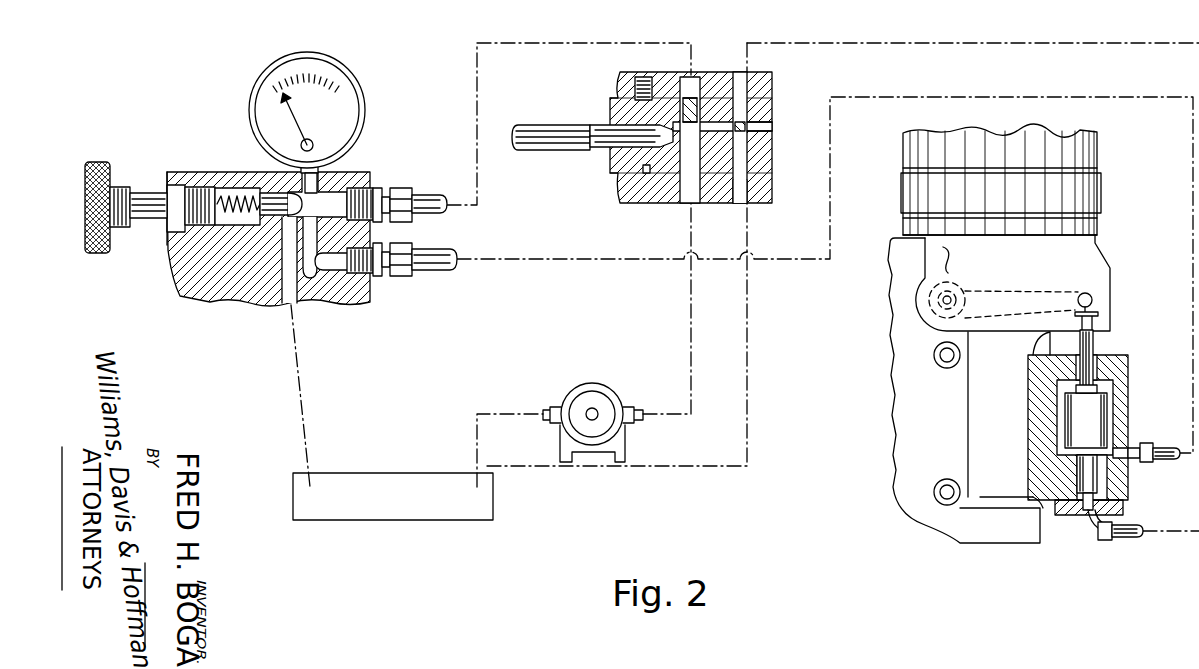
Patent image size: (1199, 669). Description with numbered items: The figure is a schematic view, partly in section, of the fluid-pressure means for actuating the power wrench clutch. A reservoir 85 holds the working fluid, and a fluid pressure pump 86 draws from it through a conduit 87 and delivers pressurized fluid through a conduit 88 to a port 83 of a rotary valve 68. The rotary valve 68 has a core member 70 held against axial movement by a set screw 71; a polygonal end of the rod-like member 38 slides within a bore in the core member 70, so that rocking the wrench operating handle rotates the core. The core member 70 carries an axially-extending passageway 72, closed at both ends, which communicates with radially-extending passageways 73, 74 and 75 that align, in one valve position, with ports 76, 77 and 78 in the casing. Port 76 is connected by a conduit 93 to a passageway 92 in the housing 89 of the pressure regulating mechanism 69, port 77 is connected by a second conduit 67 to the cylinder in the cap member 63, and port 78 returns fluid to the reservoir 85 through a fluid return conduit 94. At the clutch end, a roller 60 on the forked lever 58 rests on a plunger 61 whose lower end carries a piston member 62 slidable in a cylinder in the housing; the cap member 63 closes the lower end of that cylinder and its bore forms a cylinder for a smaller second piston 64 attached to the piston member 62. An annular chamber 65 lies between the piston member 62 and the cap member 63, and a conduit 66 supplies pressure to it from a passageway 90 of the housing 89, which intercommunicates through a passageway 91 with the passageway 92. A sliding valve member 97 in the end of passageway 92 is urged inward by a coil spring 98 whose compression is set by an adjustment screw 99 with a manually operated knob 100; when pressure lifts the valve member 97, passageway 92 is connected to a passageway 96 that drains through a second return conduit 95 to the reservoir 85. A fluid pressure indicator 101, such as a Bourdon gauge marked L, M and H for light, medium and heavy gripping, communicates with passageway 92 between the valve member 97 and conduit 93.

The rod-like member 38 is at (545, 128).
The forked lever 58 is at (1040, 300).
The roller 60 is at (1086, 293).
The plunger 61 is at (1093, 340).
The piston member 62 is at (1100, 415).
The cap member 63 is at (1072, 515).
The second piston 64 is at (1100, 475).
The annular chamber 65 is at (1070, 458).
The conduit 66 is at (437, 252).
The second conduit 67 is at (824, 43).
The rotary valve 68 is at (614, 188).
The pressure regulating mechanism 69 is at (246, 161).
The core member 70 is at (610, 110).
The set screw 71 is at (644, 77).
The axially-extending passageway 72 is at (710, 121).
The radially-extending passageway 73 is at (683, 100).
The radially-extending passageway 74 is at (765, 110).
The radially-extending passageway 75 is at (760, 145).
The port 76 is at (687, 80).
The port 77 is at (745, 80).
The port 78 is at (748, 195).
The port 83 is at (688, 198).
The reservoir 85 is at (484, 507).
The fluid pressure pump 86 is at (594, 395).
The conduit 87 is at (526, 414).
The conduit 88 is at (690, 332).
The housing 89 is at (356, 197).
The passageway 90 is at (330, 270).
The passageway 91 is at (305, 285).
The passageway 92 is at (340, 190).
The conduit 93 is at (428, 198).
The fluid return conduit 94 is at (749, 394).
The second return conduit 95 is at (306, 420).
The passageway 96 is at (289, 290).
The sliding valve member 97 is at (276, 200).
The coil spring 98 is at (225, 195).
The adjustment screw 99 is at (175, 185).
The knob 100 is at (93, 162).
The fluid pressure indicator 101 is at (365, 92).